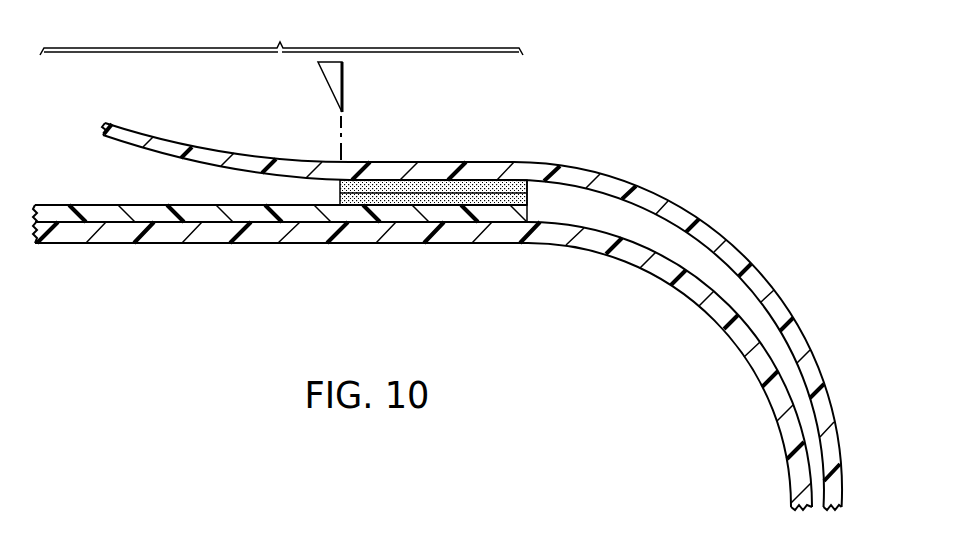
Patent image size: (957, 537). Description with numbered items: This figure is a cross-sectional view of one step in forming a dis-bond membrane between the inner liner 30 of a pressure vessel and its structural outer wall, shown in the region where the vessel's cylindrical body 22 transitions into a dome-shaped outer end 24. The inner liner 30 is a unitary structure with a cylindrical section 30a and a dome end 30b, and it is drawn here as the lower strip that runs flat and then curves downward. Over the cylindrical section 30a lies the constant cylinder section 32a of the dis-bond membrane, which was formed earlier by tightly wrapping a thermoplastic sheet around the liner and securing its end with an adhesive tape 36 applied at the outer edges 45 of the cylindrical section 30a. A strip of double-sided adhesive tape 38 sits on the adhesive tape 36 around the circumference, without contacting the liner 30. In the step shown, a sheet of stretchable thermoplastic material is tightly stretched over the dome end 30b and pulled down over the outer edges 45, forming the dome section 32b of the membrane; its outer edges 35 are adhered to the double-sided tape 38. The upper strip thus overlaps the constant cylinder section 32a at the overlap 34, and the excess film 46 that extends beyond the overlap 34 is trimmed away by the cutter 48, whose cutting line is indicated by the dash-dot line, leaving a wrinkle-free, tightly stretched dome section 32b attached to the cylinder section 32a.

The cylindrical body 22 is at (281, 35).
The dome-shaped outer end 24 is at (802, 253).
The inner liner 30 is at (679, 293).
The cylindrical section of the inner liner 30a is at (205, 244).
The dome end of the inner liner 30b is at (770, 408).
The constant cylinder section of the dis-bond membrane 32a is at (58, 204).
The dome section of the dis-bond membrane 32b is at (685, 207).
The overlap 34 is at (502, 134).
The outer edges of the dome section 35 is at (435, 168).
The adhesive tape 36 is at (529, 199).
The double-sided adhesive tape 38 is at (388, 182).
The outer edges of the cylindrical section of the liner 45 is at (461, 215).
The excess film 46 is at (165, 139).
The cutter 48 is at (319, 79).